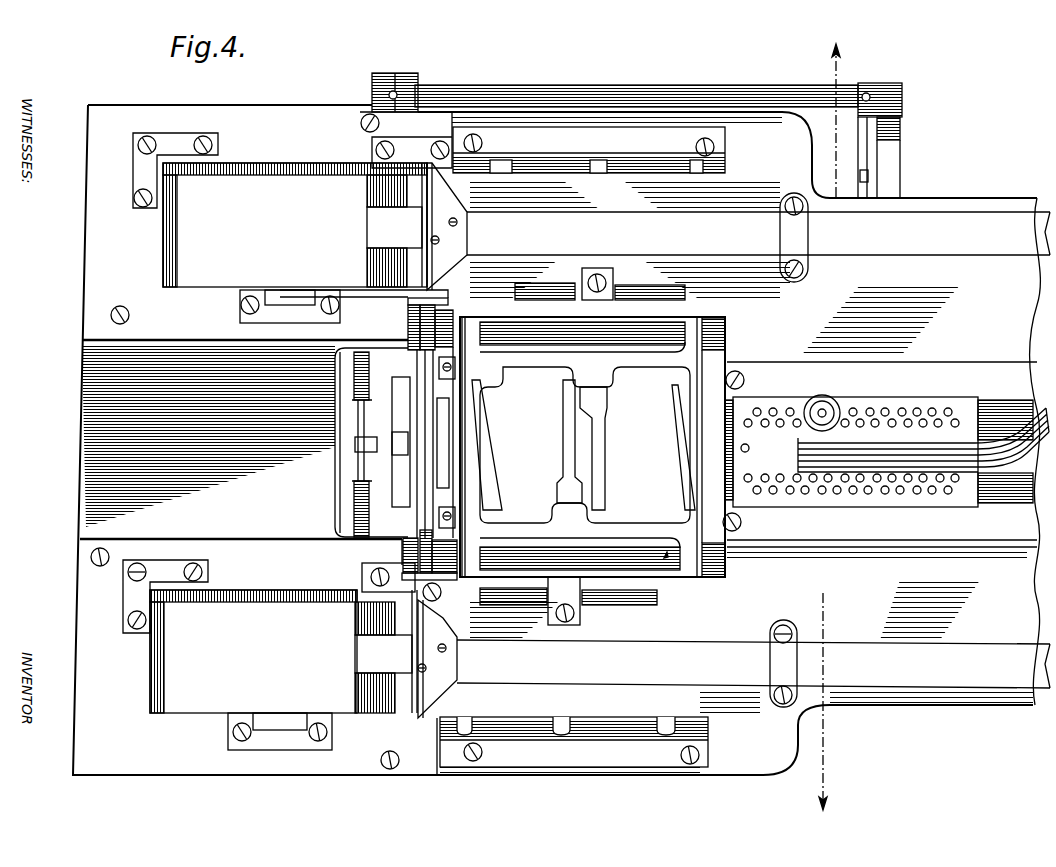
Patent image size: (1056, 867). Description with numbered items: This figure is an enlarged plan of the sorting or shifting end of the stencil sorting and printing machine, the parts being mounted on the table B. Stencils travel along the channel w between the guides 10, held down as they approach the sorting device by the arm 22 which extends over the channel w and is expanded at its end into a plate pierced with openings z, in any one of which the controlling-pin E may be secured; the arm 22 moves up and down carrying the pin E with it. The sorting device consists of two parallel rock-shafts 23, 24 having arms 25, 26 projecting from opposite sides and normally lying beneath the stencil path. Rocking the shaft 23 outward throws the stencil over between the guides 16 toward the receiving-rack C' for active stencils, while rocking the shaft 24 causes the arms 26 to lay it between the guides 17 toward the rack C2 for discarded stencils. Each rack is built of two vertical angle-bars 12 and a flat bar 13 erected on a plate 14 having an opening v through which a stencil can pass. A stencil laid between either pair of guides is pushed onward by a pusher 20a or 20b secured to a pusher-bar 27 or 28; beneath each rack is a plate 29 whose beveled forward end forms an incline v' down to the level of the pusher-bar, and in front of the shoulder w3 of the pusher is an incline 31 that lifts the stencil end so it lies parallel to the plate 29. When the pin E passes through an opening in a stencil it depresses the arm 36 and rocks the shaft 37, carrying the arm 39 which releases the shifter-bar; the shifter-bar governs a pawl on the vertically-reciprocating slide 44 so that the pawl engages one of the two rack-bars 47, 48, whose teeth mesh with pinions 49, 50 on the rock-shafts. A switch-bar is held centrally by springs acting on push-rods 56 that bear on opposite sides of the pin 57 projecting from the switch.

The guides 10 is at (880, 454).
The vertical angle-bars 12 is at (134, 181).
The flat bar 13 is at (292, 292).
The plate 14 is at (556, 427).
The guides 16 is at (518, 600).
The guides 17 is at (660, 173).
The pusher 20a is at (440, 671).
The pusher 20b is at (437, 248).
The arm 22 is at (1005, 440).
The rock-shaft 23 is at (618, 548).
The rock-shaft 24 is at (665, 343).
The arms 25 is at (563, 447).
The arms 26 is at (690, 455).
The pusher-bar 27 is at (753, 663).
The pusher-bar 28 is at (758, 237).
The plate 29 is at (288, 438).
The incline 31 is at (388, 440).
The arm 36 is at (863, 158).
The rock-shaft 37 is at (588, 82).
The arm 39 is at (416, 80).
The vertically-reciprocating slide 44 is at (445, 432).
The rack-bar 47 is at (434, 366).
The rack-bar 48 is at (428, 512).
The pinion 49 is at (437, 312).
The pinion 50 is at (437, 576).
The push-rods 56 is at (355, 477).
The pin 57 is at (355, 443).
The table B is at (794, 588).
The receiving-rack C2 is at (308, 144).
The receiving-rack C' is at (149, 733).
The controlling-pin E is at (823, 411).
The opening v is at (323, 434).
The incline v' is at (392, 437).
The channel w is at (1022, 498).
The shoulder w3 is at (432, 213).
The openings z is at (774, 408).